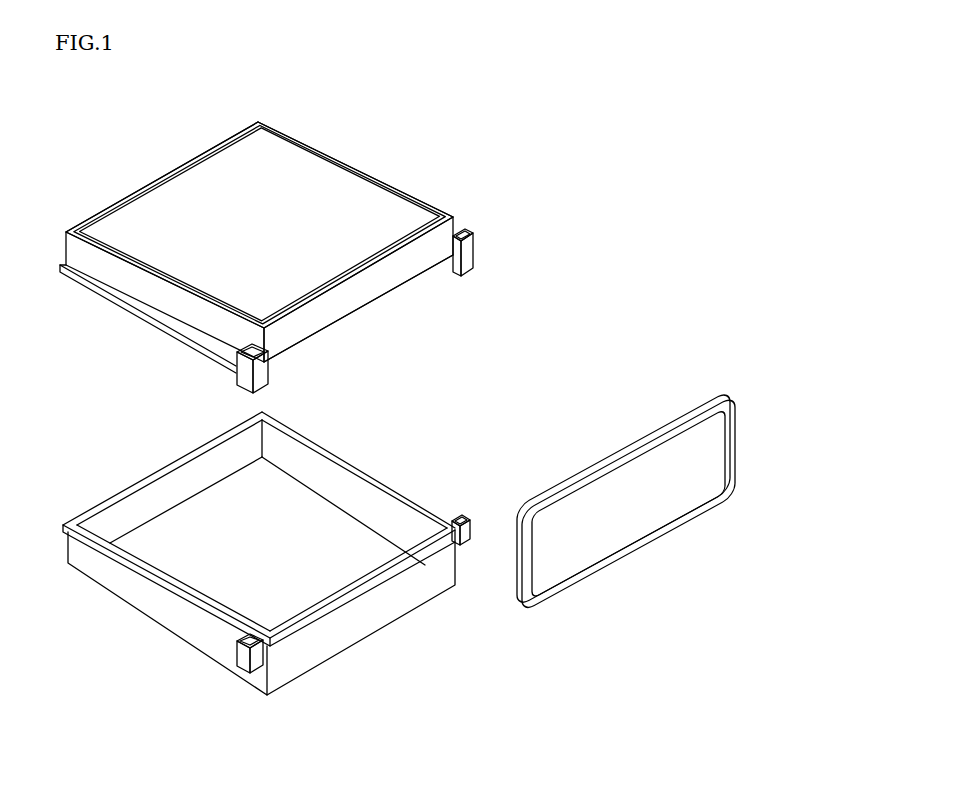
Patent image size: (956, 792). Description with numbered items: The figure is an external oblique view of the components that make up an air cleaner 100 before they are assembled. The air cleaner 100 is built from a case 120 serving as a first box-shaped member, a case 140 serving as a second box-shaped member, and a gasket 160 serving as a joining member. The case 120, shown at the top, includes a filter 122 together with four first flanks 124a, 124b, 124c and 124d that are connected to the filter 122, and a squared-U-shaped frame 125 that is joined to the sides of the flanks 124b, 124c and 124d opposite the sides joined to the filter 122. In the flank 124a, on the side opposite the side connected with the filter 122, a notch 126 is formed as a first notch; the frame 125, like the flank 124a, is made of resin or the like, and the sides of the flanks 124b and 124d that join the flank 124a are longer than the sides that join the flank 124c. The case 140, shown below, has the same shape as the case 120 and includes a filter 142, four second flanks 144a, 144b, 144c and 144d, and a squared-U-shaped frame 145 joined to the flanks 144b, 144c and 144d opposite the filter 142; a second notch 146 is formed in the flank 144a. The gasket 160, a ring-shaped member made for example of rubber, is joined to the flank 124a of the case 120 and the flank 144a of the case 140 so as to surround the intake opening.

The air cleaner 100 is at (575, 88).
The case 120 is at (322, 118).
The filter 122 is at (325, 186).
The flank 124a is at (388, 270).
The flank 124b is at (143, 293).
The flank 124c is at (156, 210).
The flank 124d is at (402, 216).
The squared-U-shaped frame 125 is at (84, 290).
The notch 126 is at (356, 312).
The case 140 is at (98, 672).
The filter 142 is at (280, 498).
The flank 144a is at (380, 607).
The flank 144b is at (106, 570).
The flank 144c is at (152, 482).
The flank 144d is at (385, 502).
The squared-U-shaped frame 145 is at (153, 583).
The notch 146 is at (328, 622).
The gasket 160 is at (647, 428).